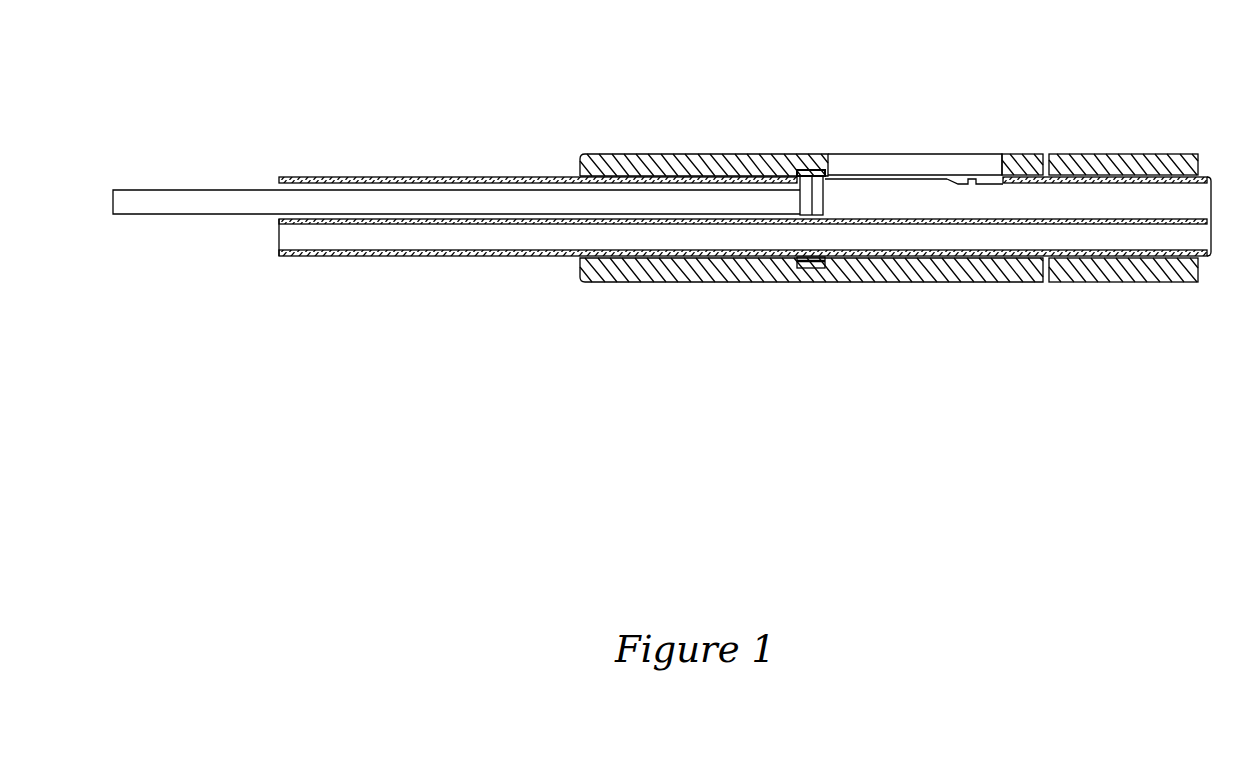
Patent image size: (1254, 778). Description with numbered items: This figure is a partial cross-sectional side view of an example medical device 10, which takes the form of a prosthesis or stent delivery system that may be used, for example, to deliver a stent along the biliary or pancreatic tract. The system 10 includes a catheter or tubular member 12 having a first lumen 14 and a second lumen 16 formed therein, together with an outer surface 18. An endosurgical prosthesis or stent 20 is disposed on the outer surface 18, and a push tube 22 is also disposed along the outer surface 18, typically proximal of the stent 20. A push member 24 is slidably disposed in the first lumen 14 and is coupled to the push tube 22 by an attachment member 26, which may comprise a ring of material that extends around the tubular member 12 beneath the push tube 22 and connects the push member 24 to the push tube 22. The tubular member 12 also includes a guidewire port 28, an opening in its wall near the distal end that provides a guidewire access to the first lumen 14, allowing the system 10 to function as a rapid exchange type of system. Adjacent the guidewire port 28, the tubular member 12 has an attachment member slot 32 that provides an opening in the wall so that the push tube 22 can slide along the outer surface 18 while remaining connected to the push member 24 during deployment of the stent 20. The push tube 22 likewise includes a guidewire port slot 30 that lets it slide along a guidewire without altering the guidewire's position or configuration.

The medical device 10 is at (412, 97).
The tubular member 12 is at (355, 172).
The first lumen 14 is at (304, 187).
The second lumen 16 is at (405, 240).
The outer surface 18 is at (570, 176).
The stent 20 is at (1127, 158).
The push tube 22 is at (716, 166).
The push member 24 is at (508, 202).
The attachment member 26 is at (812, 183).
The guidewire port 28 is at (987, 182).
The guidewire port slot 30 is at (915, 163).
The attachment member slot 32 is at (887, 183).